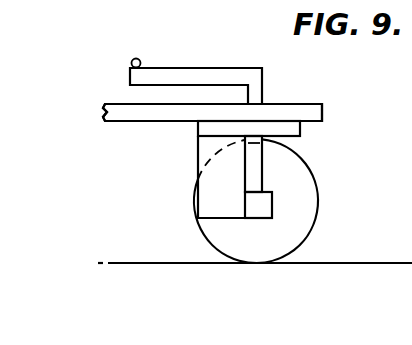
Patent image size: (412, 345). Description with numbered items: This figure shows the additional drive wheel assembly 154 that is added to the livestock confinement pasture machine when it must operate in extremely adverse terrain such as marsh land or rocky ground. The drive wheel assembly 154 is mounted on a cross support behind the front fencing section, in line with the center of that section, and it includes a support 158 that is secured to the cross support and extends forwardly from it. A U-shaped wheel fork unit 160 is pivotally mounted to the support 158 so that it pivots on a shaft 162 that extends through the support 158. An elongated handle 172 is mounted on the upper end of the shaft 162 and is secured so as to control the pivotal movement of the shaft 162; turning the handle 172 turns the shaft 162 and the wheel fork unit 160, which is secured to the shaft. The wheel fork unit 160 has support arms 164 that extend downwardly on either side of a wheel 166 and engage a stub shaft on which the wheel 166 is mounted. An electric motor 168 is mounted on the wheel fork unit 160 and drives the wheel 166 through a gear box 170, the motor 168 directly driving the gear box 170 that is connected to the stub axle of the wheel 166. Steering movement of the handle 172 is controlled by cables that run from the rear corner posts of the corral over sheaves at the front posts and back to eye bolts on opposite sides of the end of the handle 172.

The drive wheel assembly 154 is at (142, 127).
The support 158 is at (303, 109).
The wheel fork unit 160 is at (301, 132).
The shaft 162 is at (264, 87).
The support arms 164 is at (256, 169).
The wheel 166 is at (283, 235).
The electric motor 168 is at (200, 152).
The gear box 170 is at (263, 207).
The handle 172 is at (172, 80).